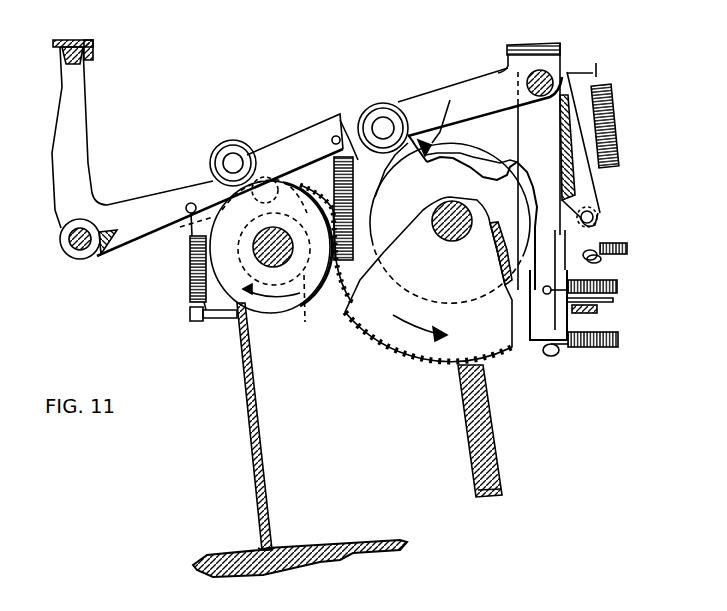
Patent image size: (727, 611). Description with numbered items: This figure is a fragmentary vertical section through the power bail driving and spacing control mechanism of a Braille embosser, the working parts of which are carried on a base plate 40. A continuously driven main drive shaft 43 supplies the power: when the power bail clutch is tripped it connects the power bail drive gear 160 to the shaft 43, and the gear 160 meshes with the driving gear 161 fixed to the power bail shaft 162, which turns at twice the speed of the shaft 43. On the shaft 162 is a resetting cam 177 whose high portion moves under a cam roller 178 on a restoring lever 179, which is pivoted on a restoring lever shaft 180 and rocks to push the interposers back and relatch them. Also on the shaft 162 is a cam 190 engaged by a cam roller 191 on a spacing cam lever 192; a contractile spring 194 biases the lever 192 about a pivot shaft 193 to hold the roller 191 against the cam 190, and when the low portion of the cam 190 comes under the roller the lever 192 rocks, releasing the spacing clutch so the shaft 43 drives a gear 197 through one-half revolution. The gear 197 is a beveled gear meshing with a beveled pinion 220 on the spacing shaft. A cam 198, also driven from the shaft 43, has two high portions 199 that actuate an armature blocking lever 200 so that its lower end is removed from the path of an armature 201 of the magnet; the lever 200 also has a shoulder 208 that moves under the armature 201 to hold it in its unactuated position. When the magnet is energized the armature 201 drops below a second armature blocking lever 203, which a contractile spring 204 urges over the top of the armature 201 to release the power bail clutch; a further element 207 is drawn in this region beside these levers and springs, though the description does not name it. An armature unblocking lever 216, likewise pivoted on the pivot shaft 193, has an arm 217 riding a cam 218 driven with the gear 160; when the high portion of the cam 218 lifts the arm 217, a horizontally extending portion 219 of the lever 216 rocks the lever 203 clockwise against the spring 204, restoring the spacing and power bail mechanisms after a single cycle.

The base plate 40 is at (333, 550).
The main drive shaft 43 is at (448, 241).
The power bail drive gear 160 is at (367, 201).
The driving gear 161 is at (300, 197).
The power bail shaft 162 is at (253, 244).
The resetting cam 177 is at (304, 318).
The cam roller 178 is at (262, 166).
The restoring lever 179 is at (157, 196).
The restoring lever shaft 180 is at (66, 246).
The cam 190 is at (210, 272).
The cam roller 191 is at (212, 157).
The spacing cam lever 192 is at (334, 130).
The pivot shaft 193 is at (548, 76).
The contractile spring 194 is at (311, 128).
The gear 197 is at (440, 365).
The cam 198 is at (424, 145).
The high portions 199 is at (405, 105).
The armature blocking lever 200 is at (413, 95).
The armature 201 is at (583, 315).
The armature blocking lever 203 is at (613, 300).
The contractile spring 204 is at (620, 343).
The spring 207 is at (617, 283).
The shoulder 208 is at (543, 328).
The armature unblocking lever 216 is at (583, 192).
The arm 217 is at (450, 100).
The cam 218 is at (492, 140).
The horizontally extending portion 219 is at (612, 258).
The beveled pinion 220 is at (500, 478).